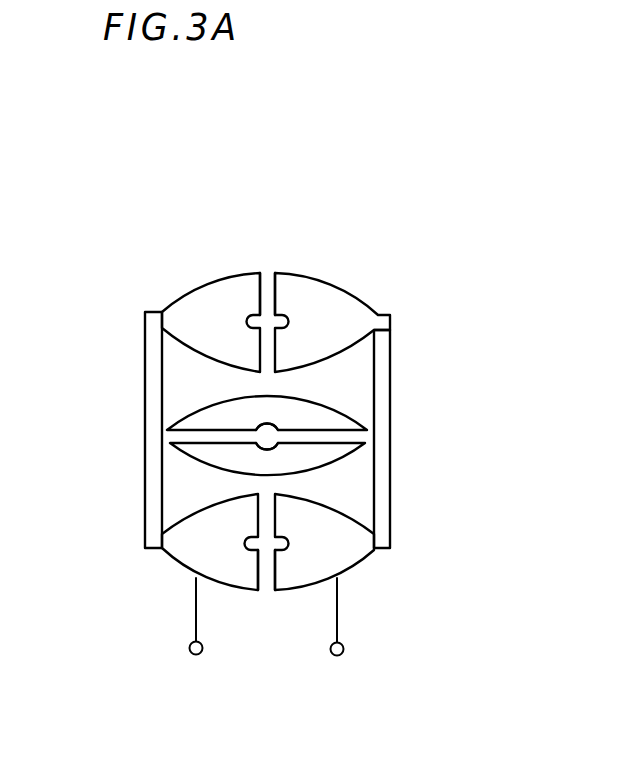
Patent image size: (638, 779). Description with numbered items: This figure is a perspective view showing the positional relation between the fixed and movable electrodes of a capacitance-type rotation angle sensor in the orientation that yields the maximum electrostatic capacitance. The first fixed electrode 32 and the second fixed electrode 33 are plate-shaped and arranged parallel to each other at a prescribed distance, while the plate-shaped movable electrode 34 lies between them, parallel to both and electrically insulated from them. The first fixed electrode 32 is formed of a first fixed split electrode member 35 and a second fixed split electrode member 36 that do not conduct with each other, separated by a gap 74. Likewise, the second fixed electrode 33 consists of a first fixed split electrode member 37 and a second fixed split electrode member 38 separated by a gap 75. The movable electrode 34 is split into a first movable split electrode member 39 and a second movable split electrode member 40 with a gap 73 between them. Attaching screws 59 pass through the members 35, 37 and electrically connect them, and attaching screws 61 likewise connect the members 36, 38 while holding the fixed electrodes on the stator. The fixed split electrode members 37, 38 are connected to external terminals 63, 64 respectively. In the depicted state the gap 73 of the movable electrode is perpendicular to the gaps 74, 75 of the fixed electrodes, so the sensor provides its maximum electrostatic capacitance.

The first fixed electrode 32 is at (335, 266).
The second fixed electrode 33 is at (347, 503).
The movable electrode 34 is at (345, 385).
The first fixed split electrode member 35 is at (200, 277).
The second fixed split electrode member 36 is at (353, 298).
The first fixed split electrode member 37 is at (177, 563).
The second fixed split electrode member 38 is at (355, 567).
The first movable split electrode member 39 is at (199, 404).
The second movable split electrode member 40 is at (200, 458).
The attaching screws 59 is at (146, 431).
The attaching screws 61 is at (389, 439).
The external terminal 63 is at (191, 651).
The external terminal 64 is at (344, 650).
The gap 73 is at (321, 434).
The gap 74 is at (268, 277).
The gap 75 is at (266, 580).